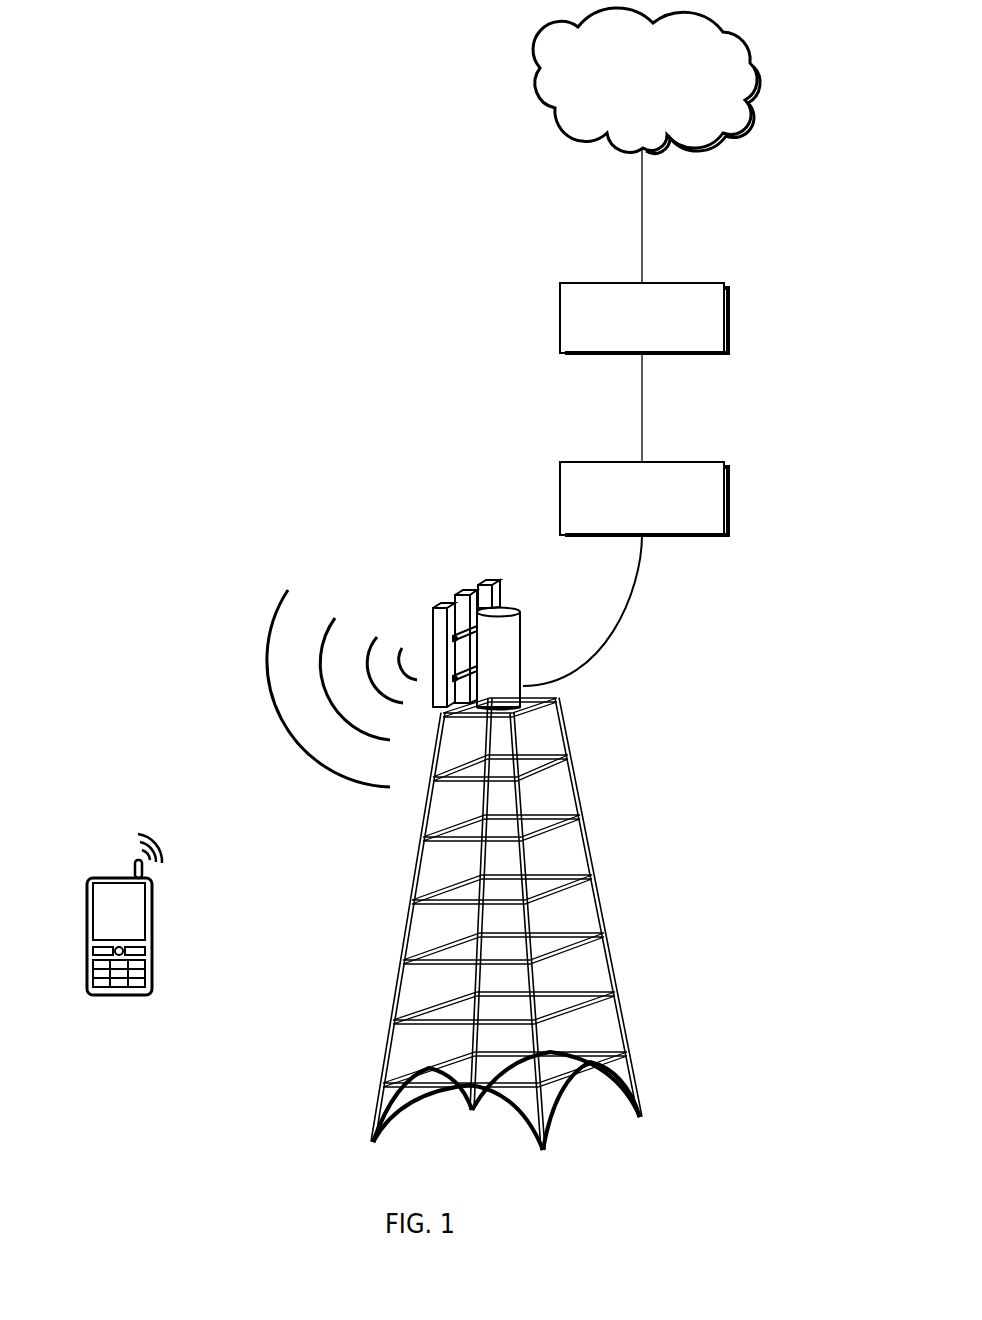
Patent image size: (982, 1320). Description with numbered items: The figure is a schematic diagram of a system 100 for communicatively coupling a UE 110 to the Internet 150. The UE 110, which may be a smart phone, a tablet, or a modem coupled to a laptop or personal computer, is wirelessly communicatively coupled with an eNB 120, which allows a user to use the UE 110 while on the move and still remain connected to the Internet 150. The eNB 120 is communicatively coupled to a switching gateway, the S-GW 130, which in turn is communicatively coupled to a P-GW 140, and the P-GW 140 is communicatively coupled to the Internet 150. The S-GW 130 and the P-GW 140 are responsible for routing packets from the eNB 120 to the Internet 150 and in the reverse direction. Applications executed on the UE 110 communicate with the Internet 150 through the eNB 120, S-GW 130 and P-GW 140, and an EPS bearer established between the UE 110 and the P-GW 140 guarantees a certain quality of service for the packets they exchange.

The system 100 is at (777, 167).
The UE 110 is at (152, 913).
The eNB 120 is at (587, 857).
The switching gateway (S-GW) 130 is at (560, 495).
The P-GW 140 is at (560, 315).
The Internet 150 is at (540, 68).